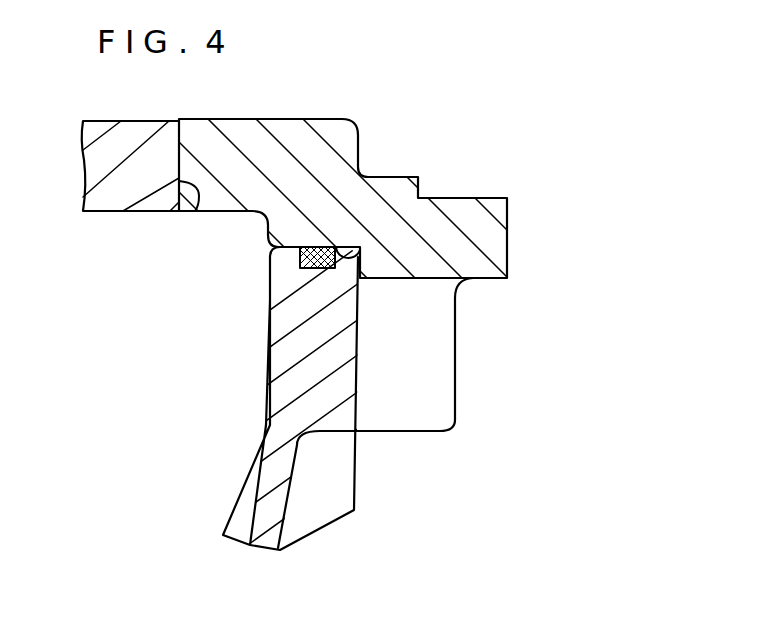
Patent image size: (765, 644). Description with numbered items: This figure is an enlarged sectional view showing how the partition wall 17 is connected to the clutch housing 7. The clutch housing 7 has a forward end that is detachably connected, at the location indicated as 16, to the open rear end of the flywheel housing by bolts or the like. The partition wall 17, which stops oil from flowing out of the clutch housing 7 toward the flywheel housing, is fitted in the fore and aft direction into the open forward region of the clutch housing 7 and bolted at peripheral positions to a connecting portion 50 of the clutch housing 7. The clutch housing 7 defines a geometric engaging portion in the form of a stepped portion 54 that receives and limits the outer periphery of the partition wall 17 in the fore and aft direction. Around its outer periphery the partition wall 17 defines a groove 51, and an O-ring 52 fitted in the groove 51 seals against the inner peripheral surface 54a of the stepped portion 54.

The connecting portion 50 is at (460, 153).
The clutch housing 7 is at (103, 202).
The connection of flywheel housing to clutch housing 16 is at (196, 212).
The partition wall 17 is at (223, 535).
The groove 51 is at (320, 268).
The O-ring 52 is at (300, 252).
The stepped portion 54 is at (347, 268).
The inner peripheral surface 54a is at (350, 257).